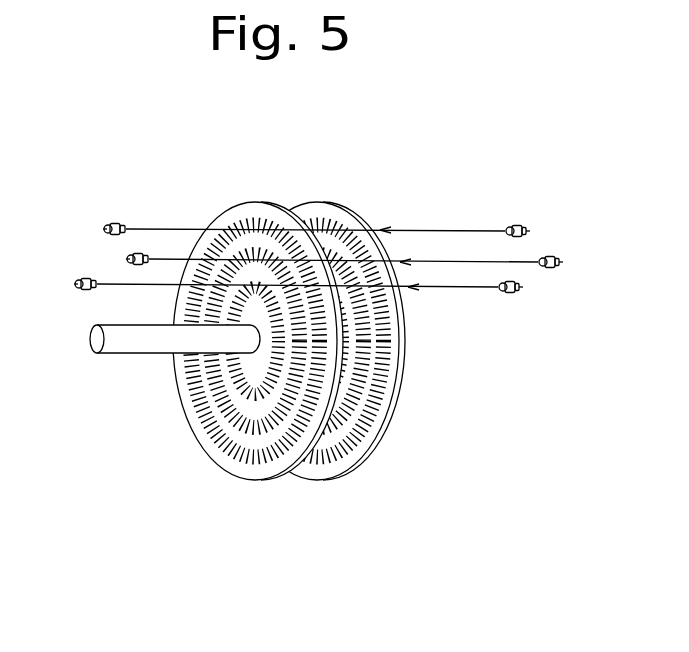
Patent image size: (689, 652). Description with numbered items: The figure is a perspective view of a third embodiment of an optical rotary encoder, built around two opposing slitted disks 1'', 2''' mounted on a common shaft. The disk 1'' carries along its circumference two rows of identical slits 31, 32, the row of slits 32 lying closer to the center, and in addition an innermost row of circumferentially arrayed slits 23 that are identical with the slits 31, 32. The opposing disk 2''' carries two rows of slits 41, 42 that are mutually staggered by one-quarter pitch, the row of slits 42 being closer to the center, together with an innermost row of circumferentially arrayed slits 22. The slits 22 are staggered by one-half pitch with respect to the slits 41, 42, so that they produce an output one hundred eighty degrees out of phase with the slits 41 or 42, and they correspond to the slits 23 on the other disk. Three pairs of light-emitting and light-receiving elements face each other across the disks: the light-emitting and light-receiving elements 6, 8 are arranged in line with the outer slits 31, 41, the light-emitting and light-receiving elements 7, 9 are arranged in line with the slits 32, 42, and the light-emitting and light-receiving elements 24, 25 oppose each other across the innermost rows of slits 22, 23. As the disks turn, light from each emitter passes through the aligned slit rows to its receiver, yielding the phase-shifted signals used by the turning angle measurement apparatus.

The slitted disk 1'' is at (237, 341).
The slitted disk 2''' is at (326, 358).
The light-emitting element 6 is at (515, 227).
The light-emitting element 7 is at (560, 260).
The light-receiving element 8 is at (106, 225).
The light-receiving element 9 is at (125, 258).
The innermost row of slits 22 is at (347, 368).
The innermost row of slits 23 is at (260, 397).
The light-emitting element 24 is at (517, 293).
The light-receiving element 25 is at (78, 289).
The row of slits 31 is at (238, 222).
The row of slits 32 is at (230, 415).
The row of slits 41 is at (383, 320).
The row of slits 42 is at (328, 230).